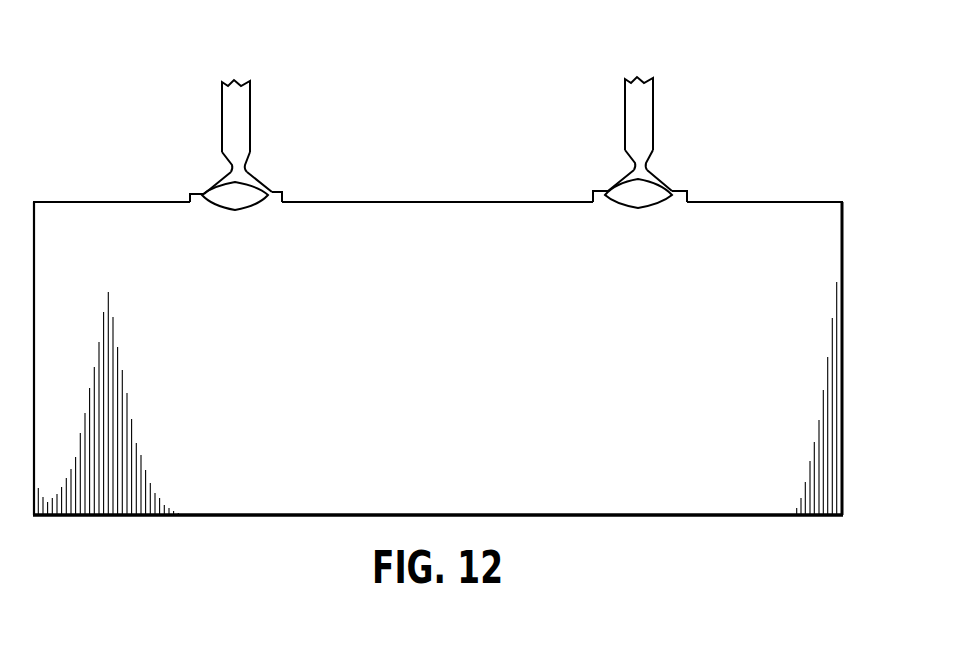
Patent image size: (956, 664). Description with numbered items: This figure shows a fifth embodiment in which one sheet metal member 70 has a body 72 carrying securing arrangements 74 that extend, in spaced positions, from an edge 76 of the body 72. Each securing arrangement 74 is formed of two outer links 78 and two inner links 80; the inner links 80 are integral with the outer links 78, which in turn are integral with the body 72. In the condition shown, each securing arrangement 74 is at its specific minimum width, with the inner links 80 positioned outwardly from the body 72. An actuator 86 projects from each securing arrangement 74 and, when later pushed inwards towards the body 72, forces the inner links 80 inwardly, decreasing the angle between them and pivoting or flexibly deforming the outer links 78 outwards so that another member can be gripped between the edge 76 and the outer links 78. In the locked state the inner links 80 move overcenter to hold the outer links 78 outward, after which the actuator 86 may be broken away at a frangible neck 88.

The sheet metal member 70 is at (703, 545).
The body 72 is at (250, 468).
The securing arrangement 74 is at (286, 157).
The edge 76 is at (461, 201).
The outer link 78 is at (188, 198).
The inner link 80 is at (212, 182).
The actuator 86 is at (236, 90).
The frangible neck 88 is at (632, 168).